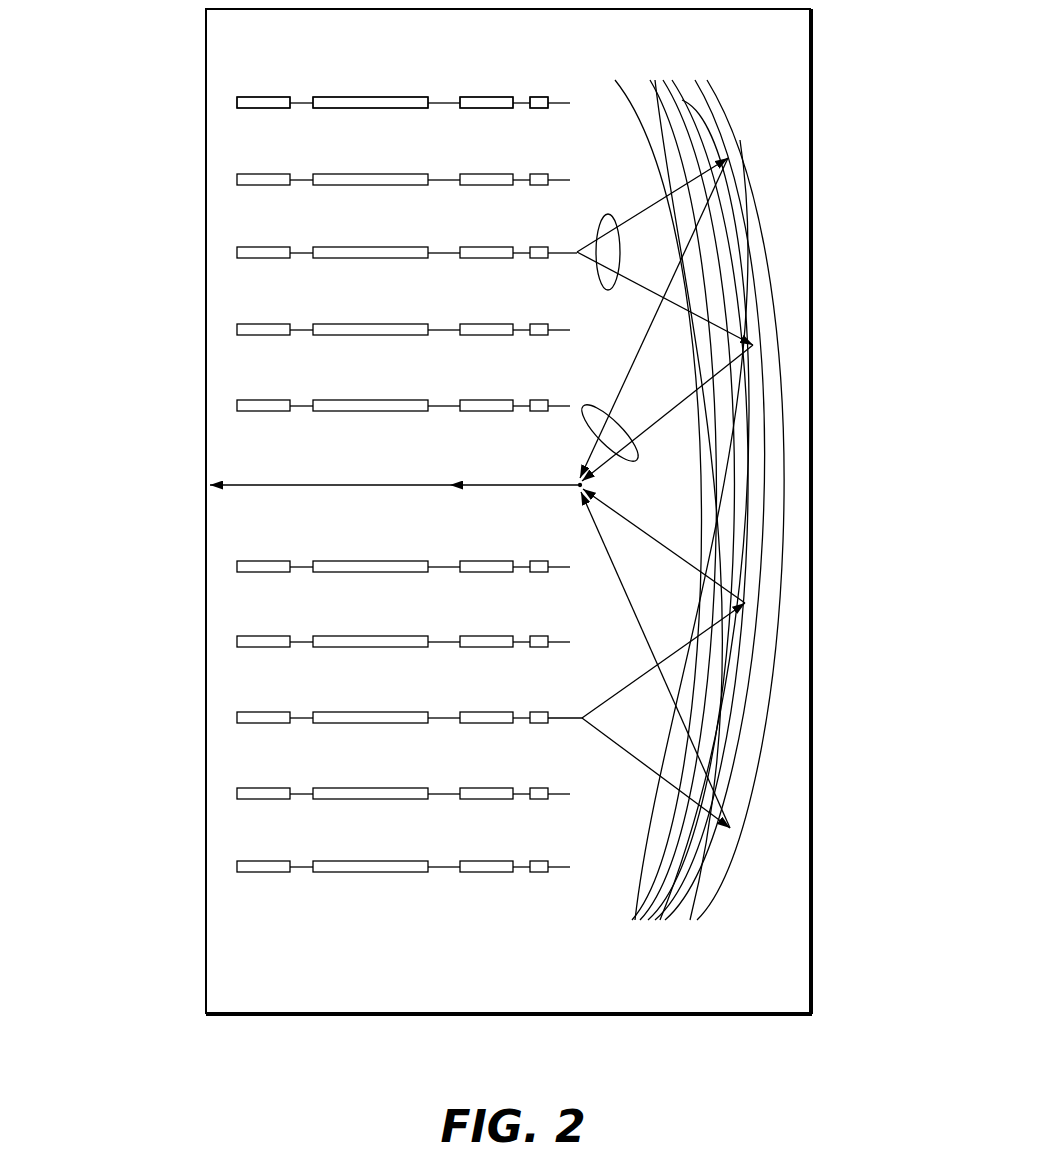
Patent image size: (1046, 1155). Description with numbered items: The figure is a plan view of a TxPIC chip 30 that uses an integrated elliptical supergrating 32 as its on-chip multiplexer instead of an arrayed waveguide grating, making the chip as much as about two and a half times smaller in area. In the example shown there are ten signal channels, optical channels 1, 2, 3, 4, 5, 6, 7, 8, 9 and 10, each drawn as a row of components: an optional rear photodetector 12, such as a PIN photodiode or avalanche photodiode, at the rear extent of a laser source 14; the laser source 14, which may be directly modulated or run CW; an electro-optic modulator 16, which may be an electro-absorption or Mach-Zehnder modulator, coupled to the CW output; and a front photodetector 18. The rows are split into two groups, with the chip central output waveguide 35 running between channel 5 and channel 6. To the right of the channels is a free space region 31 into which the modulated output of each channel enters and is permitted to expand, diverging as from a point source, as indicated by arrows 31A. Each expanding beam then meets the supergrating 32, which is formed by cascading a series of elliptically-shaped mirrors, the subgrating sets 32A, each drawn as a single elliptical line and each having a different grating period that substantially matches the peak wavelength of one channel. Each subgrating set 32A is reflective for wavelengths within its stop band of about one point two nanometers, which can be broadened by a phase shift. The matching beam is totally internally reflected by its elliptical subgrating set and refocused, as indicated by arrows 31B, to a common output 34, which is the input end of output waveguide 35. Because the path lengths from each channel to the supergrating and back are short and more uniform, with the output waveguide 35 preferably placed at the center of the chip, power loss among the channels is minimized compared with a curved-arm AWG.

The optical channel 1 is at (403, 88).
The optical channel 2 is at (403, 165).
The optical channel 3 is at (407, 238).
The optical channel 4 is at (403, 315).
The optical channel 5 is at (403, 391).
The optical channel 6 is at (403, 552).
The optical channel 7 is at (403, 627).
The optical channel 8 is at (409, 703).
The optical channel 9 is at (403, 779).
The optical channel 10 is at (403, 852).
The rear photodetector 12 is at (256, 102).
The laser source 14 is at (391, 101).
The electro-optic modulator 16 is at (486, 101).
The front photodetector 18 is at (539, 101).
The TxPIC chip 30 is at (792, 43).
The free space region 31 is at (632, 279).
The diverging beam arrows 31A is at (603, 290).
The reflected beam arrows 31B is at (637, 458).
The elliptical supergrating 32 is at (707, 532).
The subgrating set 32A is at (758, 162).
The common output 34 is at (577, 480).
The output waveguide 35 is at (303, 485).